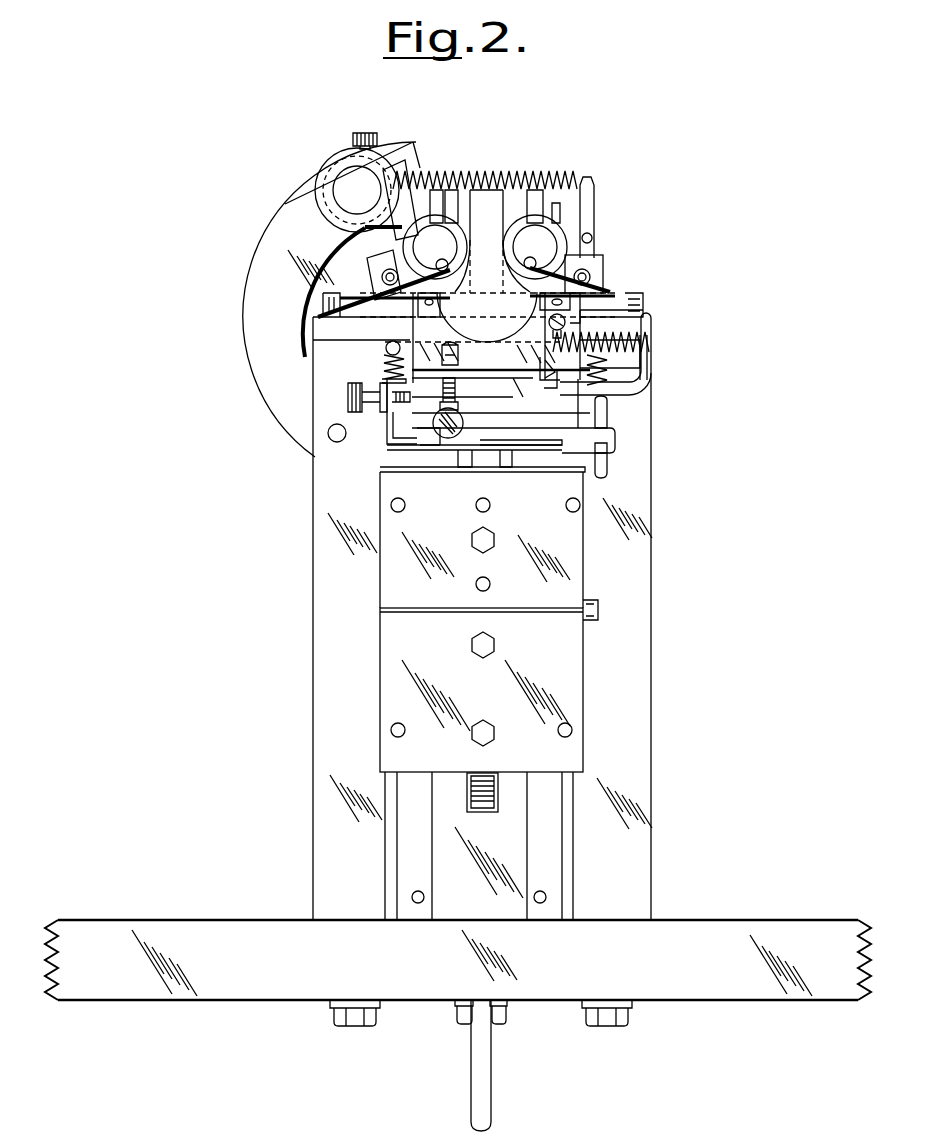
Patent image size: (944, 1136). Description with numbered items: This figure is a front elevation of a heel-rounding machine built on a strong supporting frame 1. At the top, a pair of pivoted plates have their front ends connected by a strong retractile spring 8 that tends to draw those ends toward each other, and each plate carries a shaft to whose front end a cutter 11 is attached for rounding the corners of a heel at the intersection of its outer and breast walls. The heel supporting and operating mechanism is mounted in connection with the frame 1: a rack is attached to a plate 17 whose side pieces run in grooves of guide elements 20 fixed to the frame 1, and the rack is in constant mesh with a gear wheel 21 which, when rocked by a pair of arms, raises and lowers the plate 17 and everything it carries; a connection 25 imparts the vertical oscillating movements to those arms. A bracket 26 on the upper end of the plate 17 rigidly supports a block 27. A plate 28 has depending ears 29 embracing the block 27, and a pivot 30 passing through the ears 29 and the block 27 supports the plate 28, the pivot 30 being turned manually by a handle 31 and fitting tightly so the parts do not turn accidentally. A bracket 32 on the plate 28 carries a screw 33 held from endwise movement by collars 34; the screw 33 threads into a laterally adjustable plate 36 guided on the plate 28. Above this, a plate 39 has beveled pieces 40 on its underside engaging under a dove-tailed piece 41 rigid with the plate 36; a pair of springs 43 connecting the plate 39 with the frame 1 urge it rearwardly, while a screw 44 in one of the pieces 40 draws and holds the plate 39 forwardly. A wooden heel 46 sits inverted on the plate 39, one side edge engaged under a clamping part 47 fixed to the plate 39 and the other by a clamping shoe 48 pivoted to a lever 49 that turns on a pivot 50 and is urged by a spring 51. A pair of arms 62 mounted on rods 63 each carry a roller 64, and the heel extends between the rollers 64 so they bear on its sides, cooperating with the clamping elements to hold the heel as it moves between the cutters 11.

The supporting frame 1 is at (645, 593).
The retractile spring 8 is at (485, 208).
The cutter 11 is at (437, 245).
The plate 17 is at (567, 692).
The guide elements 20 is at (410, 823).
The gear wheel 21 is at (497, 790).
The connection 25 is at (470, 1083).
The bracket 26 is at (563, 475).
The block 27 is at (495, 403).
The plate 28 is at (537, 445).
The ears 29 is at (457, 457).
The pivot 30 is at (608, 448).
The handle 31 is at (608, 467).
The bracket 32 is at (385, 430).
The screw 33 is at (417, 418).
The collars 34 is at (388, 420).
The laterally adjustable plate 36 is at (535, 410).
The plate 39 is at (387, 447).
The beveled pieces 40 is at (537, 398).
The dove-tailed piece 41 is at (466, 450).
The springs 43 is at (651, 370).
The screw 44 is at (425, 430).
The wooden heel 46 is at (505, 172).
The clamping part 47 is at (387, 353).
The clamping shoe 48 is at (528, 318).
The lever 49 is at (560, 308).
The pivot 50 is at (566, 320).
The spring 51 is at (607, 343).
The arms 62 is at (377, 274).
The rods 63 is at (420, 303).
The rollers 64 is at (455, 265).